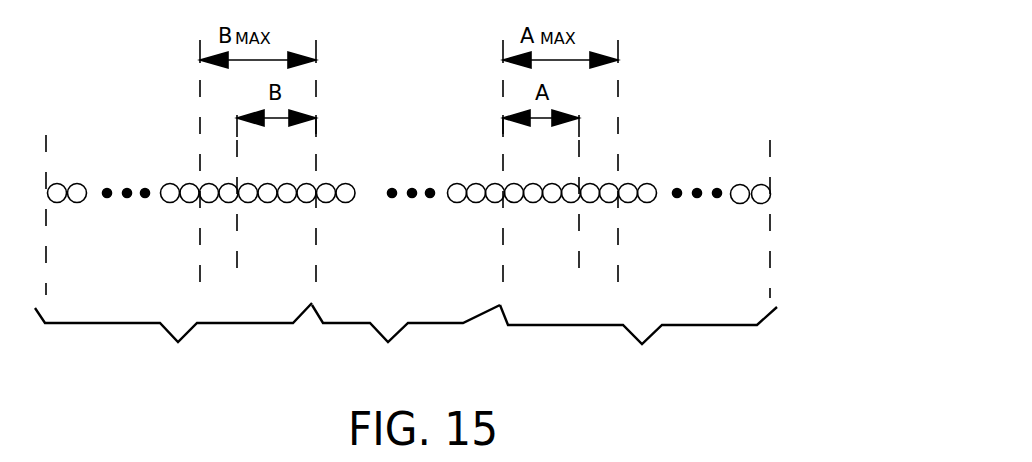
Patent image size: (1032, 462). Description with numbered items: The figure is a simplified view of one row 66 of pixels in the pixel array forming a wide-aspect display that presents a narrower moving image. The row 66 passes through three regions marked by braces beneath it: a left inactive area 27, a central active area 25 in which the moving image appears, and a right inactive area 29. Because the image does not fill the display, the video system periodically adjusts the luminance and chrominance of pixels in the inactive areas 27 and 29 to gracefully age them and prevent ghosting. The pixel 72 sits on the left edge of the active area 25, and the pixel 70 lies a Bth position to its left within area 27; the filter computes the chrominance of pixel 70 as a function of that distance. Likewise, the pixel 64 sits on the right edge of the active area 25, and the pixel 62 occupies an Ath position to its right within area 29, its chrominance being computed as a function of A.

The pixel 70 is at (263, 202).
The pixel on the left edge of active area 72 is at (327, 202).
The pixel on the right edge of active area 64 is at (495, 197).
The pixel 62 is at (570, 197).
The row of pixels 66 is at (818, 196).
The inactive area 27 is at (173, 342).
The active area 25 is at (406, 341).
The inactive area 29 is at (638, 349).